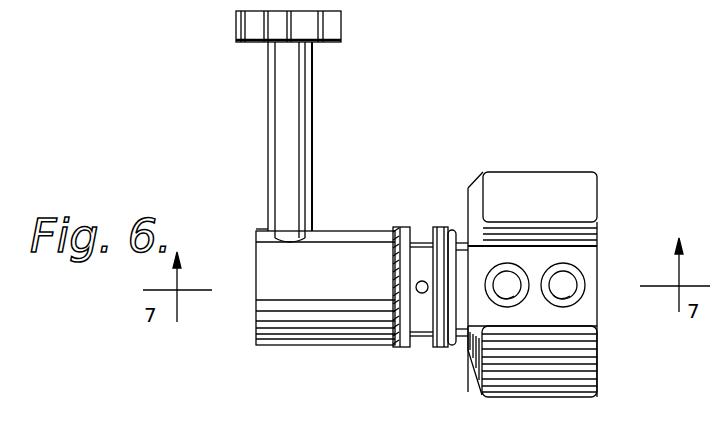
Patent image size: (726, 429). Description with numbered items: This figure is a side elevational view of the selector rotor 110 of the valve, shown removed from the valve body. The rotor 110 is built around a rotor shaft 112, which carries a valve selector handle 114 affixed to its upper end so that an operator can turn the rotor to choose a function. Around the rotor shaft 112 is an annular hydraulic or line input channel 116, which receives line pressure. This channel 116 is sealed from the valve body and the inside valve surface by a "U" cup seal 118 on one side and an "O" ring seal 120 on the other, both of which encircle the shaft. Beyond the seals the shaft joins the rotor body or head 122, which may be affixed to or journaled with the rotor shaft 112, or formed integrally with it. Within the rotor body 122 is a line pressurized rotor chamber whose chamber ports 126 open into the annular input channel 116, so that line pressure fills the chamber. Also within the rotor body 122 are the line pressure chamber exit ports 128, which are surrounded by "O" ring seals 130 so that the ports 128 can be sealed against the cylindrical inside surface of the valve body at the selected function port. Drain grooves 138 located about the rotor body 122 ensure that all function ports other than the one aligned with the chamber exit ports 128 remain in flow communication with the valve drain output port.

The rotor 110 is at (508, 164).
The rotor shaft 112 is at (345, 232).
The valve selector handle 114 is at (268, 104).
The annular hydraulic or line input channel 116 is at (440, 227).
The "U" cup seal 118 is at (392, 227).
The "O" ring seal 120 is at (451, 228).
The rotor body 122 is at (548, 190).
The chamber ports 126 is at (426, 293).
The line pressure chamber exit ports 128 is at (562, 294).
The "O" ring seals 130 is at (568, 266).
The drain grooves 138 is at (490, 340).